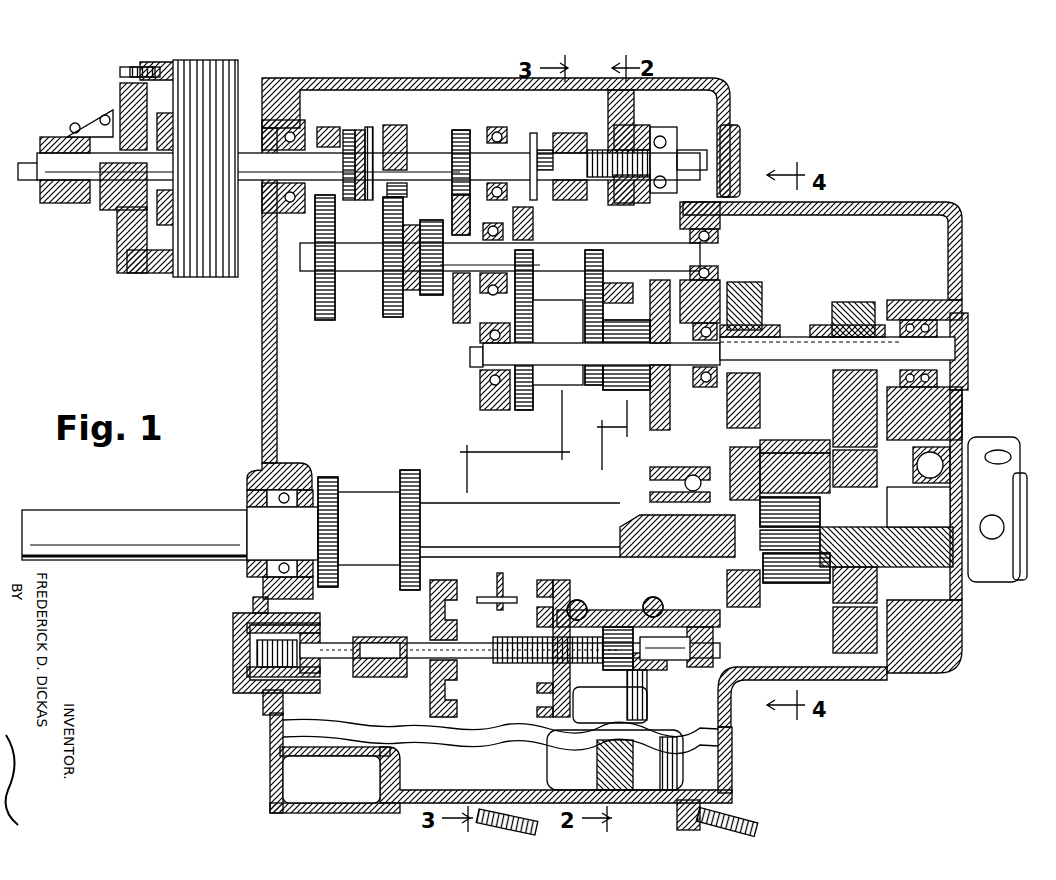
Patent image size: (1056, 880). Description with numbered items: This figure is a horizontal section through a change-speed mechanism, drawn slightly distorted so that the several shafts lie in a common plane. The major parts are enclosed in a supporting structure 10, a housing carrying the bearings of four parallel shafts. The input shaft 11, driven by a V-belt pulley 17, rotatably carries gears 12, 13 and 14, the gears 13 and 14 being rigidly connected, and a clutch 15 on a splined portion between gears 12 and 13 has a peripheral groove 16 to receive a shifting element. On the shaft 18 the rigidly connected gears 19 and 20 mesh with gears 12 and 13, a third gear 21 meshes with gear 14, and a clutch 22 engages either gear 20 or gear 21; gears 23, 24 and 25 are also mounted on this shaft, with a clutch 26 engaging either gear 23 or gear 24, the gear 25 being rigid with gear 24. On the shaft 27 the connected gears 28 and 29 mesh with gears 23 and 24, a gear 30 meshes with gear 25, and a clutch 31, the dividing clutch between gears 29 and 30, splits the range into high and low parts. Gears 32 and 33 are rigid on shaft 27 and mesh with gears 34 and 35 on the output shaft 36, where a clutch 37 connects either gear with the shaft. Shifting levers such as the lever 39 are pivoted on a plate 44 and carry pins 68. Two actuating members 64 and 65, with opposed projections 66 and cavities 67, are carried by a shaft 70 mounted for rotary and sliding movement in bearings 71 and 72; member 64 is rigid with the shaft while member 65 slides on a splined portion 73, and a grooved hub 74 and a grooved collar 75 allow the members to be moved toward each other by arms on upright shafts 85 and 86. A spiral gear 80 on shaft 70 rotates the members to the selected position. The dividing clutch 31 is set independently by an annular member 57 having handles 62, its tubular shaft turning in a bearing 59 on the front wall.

The supporting structure 10 is at (262, 418).
The input shaft 11 is at (359, 165).
The gear 12 is at (334, 137).
The gear 13 is at (405, 128).
The gear 14 is at (458, 130).
The clutch 15 is at (368, 130).
The peripheral groove 16 is at (367, 200).
The V-belt pulley 17 is at (196, 277).
The shaft 18 is at (500, 257).
The gear 19 is at (320, 318).
The gear 20 is at (392, 320).
The gear 21 is at (455, 324).
The clutch 22 is at (432, 225).
The gear 23 is at (530, 225).
The gear 24 is at (608, 310).
The gear 25 is at (662, 232).
The clutch 26 is at (562, 290).
The shaft 27 is at (595, 355).
The gear 28 is at (520, 410).
The gear 29 is at (596, 385).
The gear 30 is at (656, 428).
The clutch 31 is at (614, 332).
The gear 32 is at (762, 302).
The gear 33 is at (832, 317).
The gear 34 is at (768, 470).
The gear 35 is at (826, 462).
The output shaft 36 is at (692, 526).
The clutch 37 is at (798, 583).
The lever 39 is at (504, 580).
The supporting member or plate 44 is at (720, 640).
The annular member 57 is at (660, 820).
The bearing 59 is at (560, 767).
The handles 62 is at (512, 818).
The actuating member 64 is at (430, 613).
The actuating member 65 is at (557, 638).
The projections 66 is at (452, 592).
The cavities 67 is at (458, 612).
The pin 68 is at (495, 591).
The shaft 70 is at (510, 649).
The bearing 71 is at (715, 662).
The bearing 72 is at (385, 673).
The splined portion 73 is at (498, 660).
The grooved hub 74 is at (596, 688).
The grooved collar 75 is at (665, 668).
The spiral gear 80 is at (613, 627).
The upright shaft 85 is at (657, 598).
The upright shaft 86 is at (578, 600).